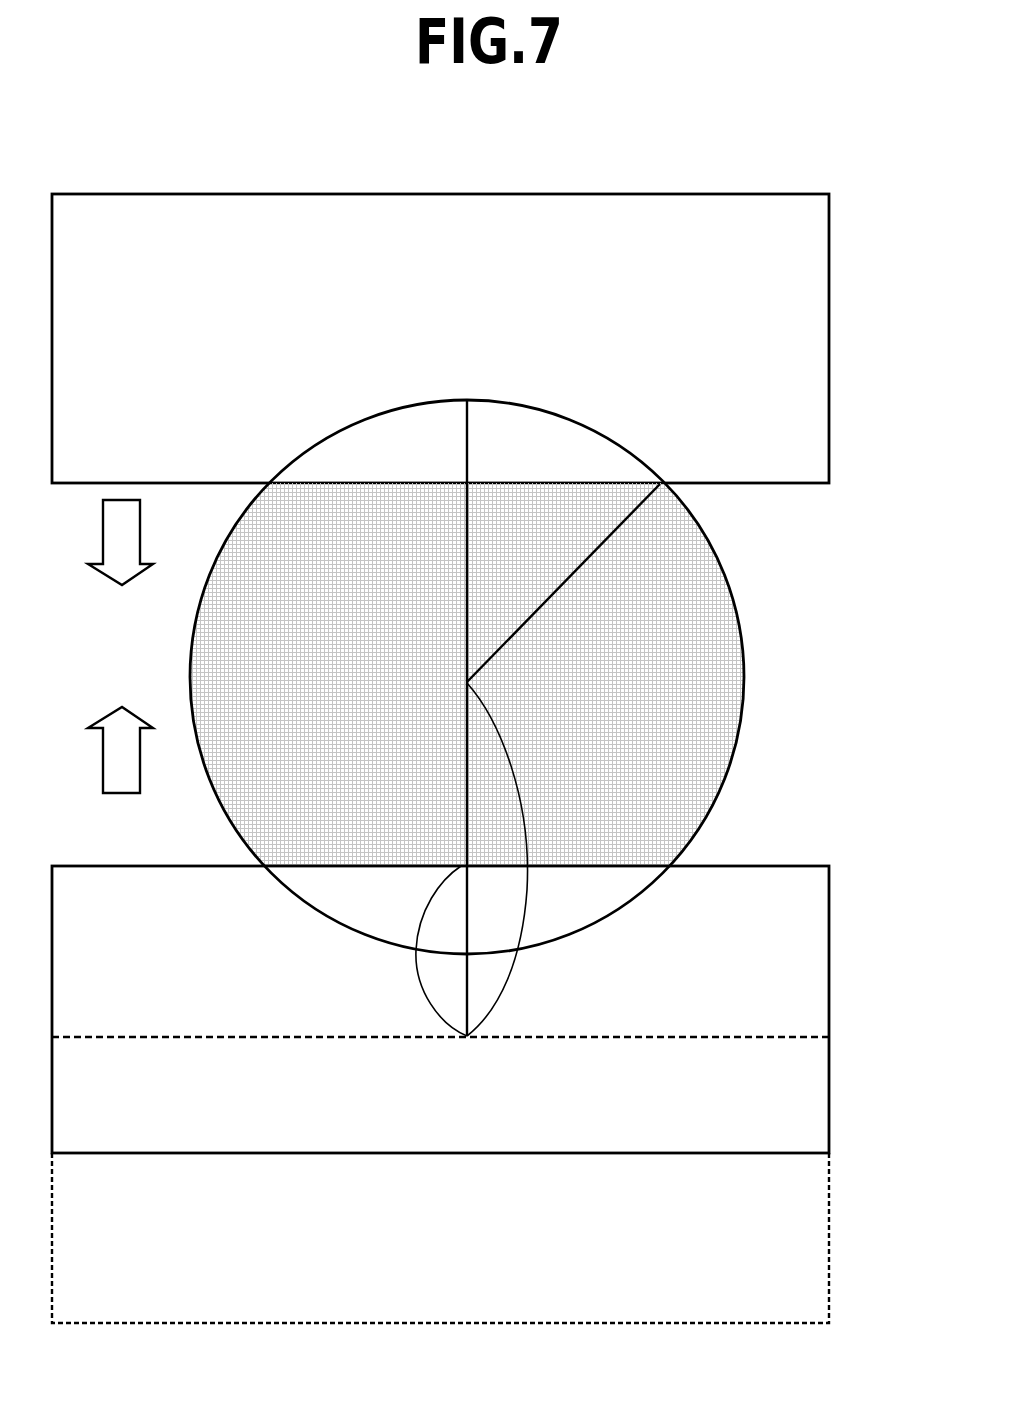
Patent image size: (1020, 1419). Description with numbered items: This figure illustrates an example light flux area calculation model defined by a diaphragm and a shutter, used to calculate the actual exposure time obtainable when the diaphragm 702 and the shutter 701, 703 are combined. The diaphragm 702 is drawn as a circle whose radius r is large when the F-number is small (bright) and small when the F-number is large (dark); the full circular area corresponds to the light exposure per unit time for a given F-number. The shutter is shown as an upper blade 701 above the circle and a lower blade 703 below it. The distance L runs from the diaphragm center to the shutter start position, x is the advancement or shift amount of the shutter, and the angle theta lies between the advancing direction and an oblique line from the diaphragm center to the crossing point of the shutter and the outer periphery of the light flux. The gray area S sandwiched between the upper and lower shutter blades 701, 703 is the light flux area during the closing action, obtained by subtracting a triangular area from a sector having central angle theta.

The shutter 701 is at (812, 332).
The diaphragm 702 is at (727, 660).
The shutter 703 is at (813, 1003).